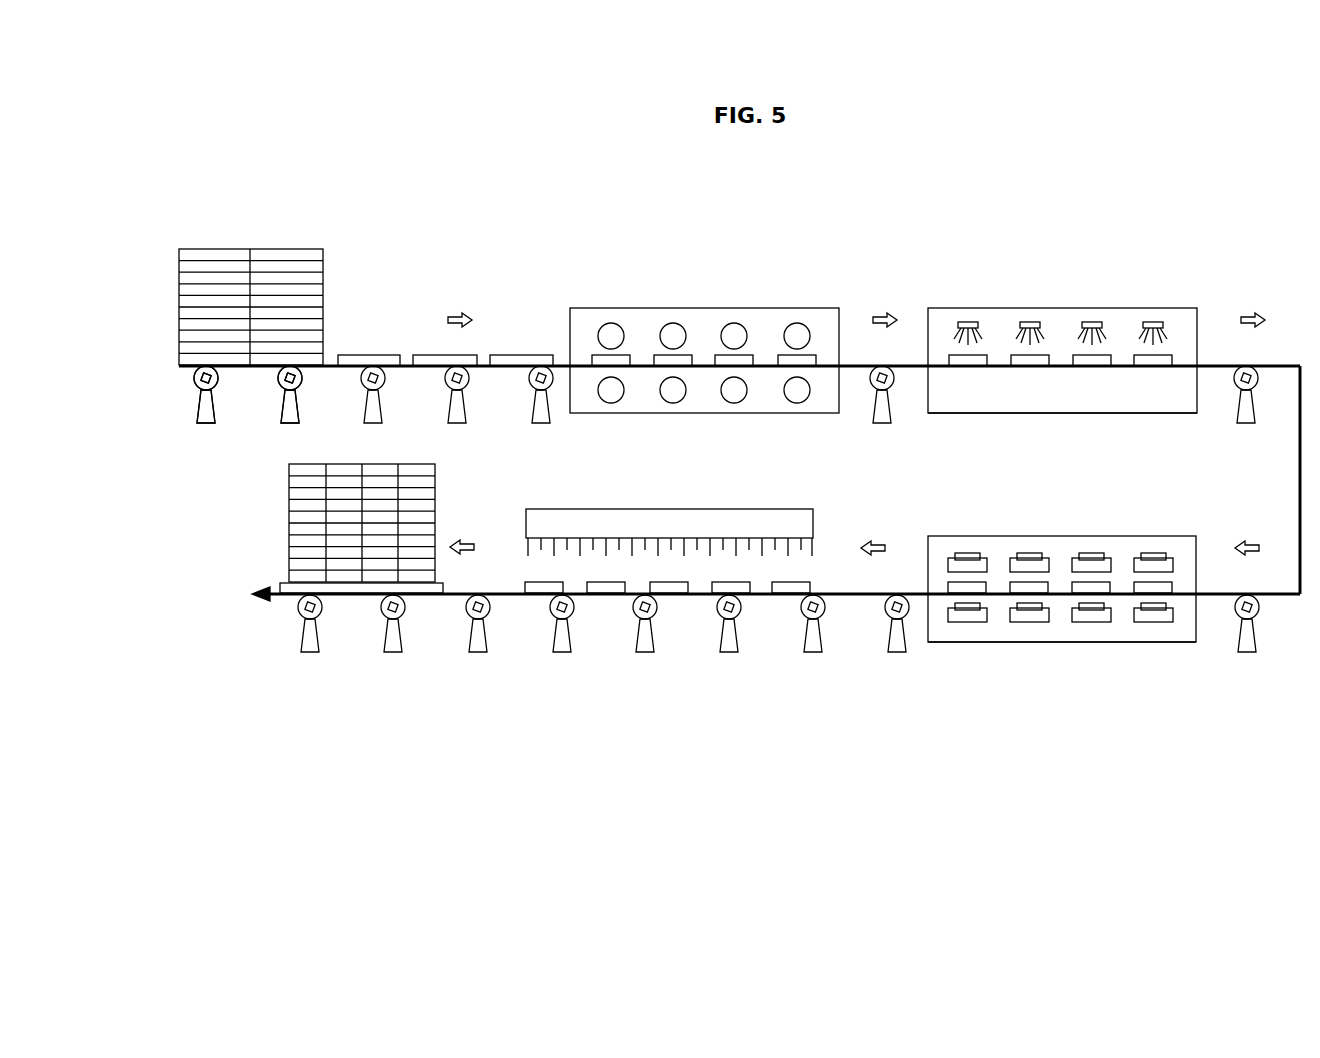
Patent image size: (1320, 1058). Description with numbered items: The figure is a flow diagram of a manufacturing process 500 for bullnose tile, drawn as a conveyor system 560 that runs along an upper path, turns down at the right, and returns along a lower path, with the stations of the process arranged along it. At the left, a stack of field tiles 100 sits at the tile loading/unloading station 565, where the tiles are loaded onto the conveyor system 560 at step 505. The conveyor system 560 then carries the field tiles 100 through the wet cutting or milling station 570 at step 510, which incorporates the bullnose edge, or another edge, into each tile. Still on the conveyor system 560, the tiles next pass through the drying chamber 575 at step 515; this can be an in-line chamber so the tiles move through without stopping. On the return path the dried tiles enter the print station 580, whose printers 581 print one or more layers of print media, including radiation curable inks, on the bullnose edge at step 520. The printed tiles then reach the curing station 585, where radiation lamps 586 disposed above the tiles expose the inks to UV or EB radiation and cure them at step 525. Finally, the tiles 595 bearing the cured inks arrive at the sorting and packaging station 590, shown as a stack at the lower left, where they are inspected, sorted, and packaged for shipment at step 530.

The manufacturing process 500 is at (438, 90).
The loading step 505 is at (251, 279).
The field tiles 100 is at (427, 355).
The conveyor system 560 is at (353, 370).
The tile loading/unloading station 565 is at (232, 391).
The cutting or milling step 510 is at (704, 360).
The wet cutting or milling station 570 is at (717, 413).
The drying step 515 is at (1062, 360).
The drying chamber 575 is at (1073, 413).
The curing step 525 is at (669, 513).
The curing station 585 is at (770, 510).
The radiation lamps 586 is at (575, 520).
The printing step 520 is at (1077, 597).
The print station 580 is at (1082, 642).
The printers 581 is at (1160, 613).
The sorting and packaging step 530 is at (347, 528).
The tiles with cured inks 595 is at (295, 540).
The sorting and packaging station 590 is at (335, 621).